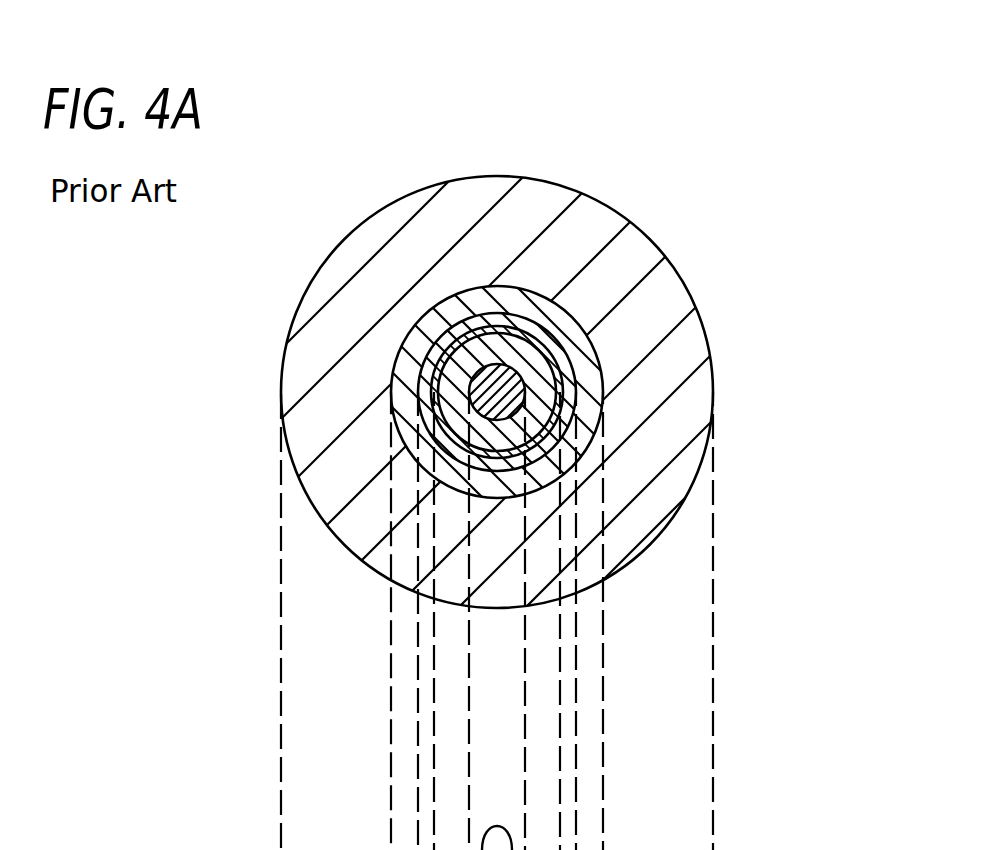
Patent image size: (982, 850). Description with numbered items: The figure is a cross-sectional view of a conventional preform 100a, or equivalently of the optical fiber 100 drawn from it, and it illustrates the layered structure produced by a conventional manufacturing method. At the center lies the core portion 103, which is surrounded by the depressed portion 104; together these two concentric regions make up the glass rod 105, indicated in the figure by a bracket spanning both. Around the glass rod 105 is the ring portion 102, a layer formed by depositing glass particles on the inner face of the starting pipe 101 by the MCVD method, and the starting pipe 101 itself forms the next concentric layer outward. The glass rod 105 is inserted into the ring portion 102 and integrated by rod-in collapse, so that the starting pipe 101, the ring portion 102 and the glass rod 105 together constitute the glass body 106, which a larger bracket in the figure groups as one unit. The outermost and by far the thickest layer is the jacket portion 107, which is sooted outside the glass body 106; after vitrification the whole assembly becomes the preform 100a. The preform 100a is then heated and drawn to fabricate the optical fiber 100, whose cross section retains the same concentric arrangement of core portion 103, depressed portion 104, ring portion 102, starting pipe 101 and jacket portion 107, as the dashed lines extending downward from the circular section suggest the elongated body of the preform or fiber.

The optical fiber 100 is at (573, 509).
The preform 100a is at (706, 252).
The starting pipe 101 is at (428, 323).
The ring portion 102 is at (482, 320).
The core portion 103 is at (495, 376).
The depressed portion 104 is at (522, 357).
The glass rod 105 is at (628, 132).
The glass body 106 is at (605, 77).
The jacket portion 107 is at (700, 396).